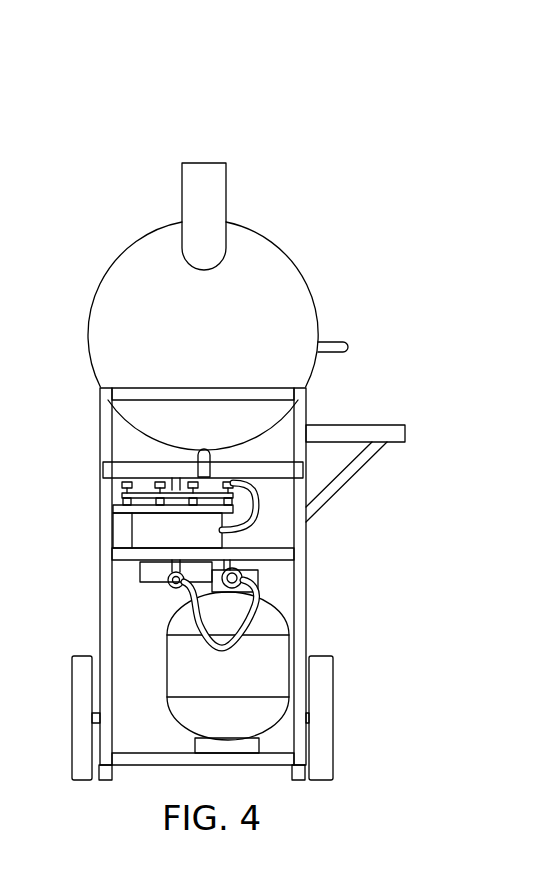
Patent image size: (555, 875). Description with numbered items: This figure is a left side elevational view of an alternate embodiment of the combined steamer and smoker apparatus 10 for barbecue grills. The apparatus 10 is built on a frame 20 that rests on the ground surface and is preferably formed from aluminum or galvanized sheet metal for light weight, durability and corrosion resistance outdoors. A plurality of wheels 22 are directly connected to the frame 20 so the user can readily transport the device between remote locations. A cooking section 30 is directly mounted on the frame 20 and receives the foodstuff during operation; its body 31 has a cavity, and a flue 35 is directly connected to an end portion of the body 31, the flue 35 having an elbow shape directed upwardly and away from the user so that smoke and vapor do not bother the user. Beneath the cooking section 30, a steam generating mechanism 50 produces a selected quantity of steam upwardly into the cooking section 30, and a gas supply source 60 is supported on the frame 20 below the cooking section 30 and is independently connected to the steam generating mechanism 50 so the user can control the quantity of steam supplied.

The apparatus 10 is at (287, 120).
The frame 20 is at (100, 585).
The wheels 22 is at (72, 707).
The cooking section 30 is at (97, 241).
The body 31 is at (280, 240).
The flue 35 is at (203, 177).
The steam generating mechanism 50 is at (85, 497).
The gas supply source 60 is at (185, 658).